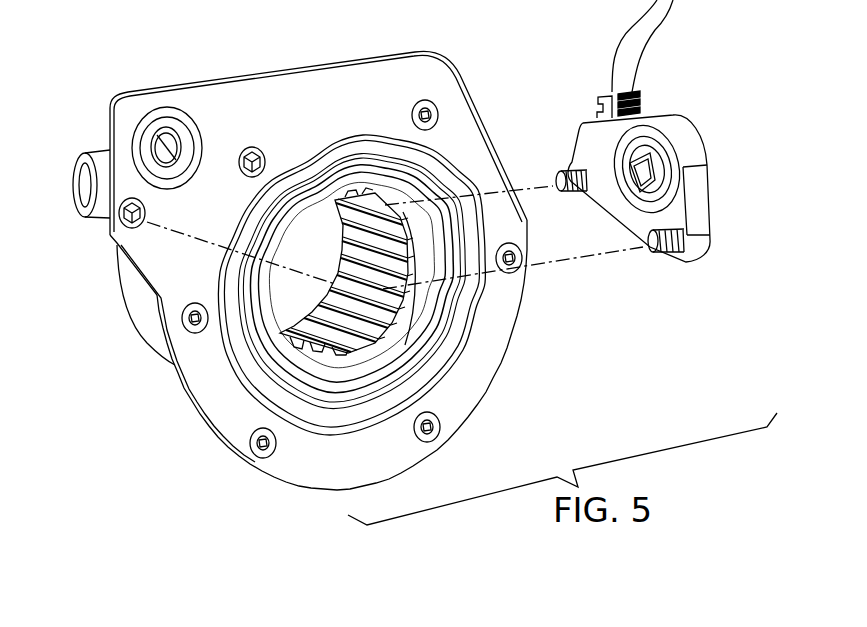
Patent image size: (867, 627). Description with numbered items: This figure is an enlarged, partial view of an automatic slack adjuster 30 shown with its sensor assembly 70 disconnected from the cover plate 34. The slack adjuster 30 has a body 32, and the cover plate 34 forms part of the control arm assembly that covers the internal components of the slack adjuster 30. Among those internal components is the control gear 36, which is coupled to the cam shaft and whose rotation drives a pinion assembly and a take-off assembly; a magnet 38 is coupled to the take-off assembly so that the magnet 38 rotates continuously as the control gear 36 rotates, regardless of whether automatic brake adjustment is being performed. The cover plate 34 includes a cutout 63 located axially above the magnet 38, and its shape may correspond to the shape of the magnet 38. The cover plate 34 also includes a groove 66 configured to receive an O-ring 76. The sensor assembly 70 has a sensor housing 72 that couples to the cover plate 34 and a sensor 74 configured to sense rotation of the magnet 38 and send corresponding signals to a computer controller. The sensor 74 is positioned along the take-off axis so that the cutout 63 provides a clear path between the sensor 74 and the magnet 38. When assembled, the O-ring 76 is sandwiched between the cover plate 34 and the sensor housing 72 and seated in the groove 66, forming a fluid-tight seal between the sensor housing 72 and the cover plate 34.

The automatic slack adjuster 30 is at (128, 404).
The body 32 is at (142, 300).
The cover plate 34 is at (387, 72).
The control gear 36 is at (383, 340).
The magnet 38 is at (167, 145).
The cutout 63 is at (170, 167).
The groove 66 is at (197, 143).
The sensor assembly 70 is at (726, 140).
The sensor housing 72 is at (700, 202).
The sensor 74 is at (633, 172).
The O-ring 76 is at (622, 158).